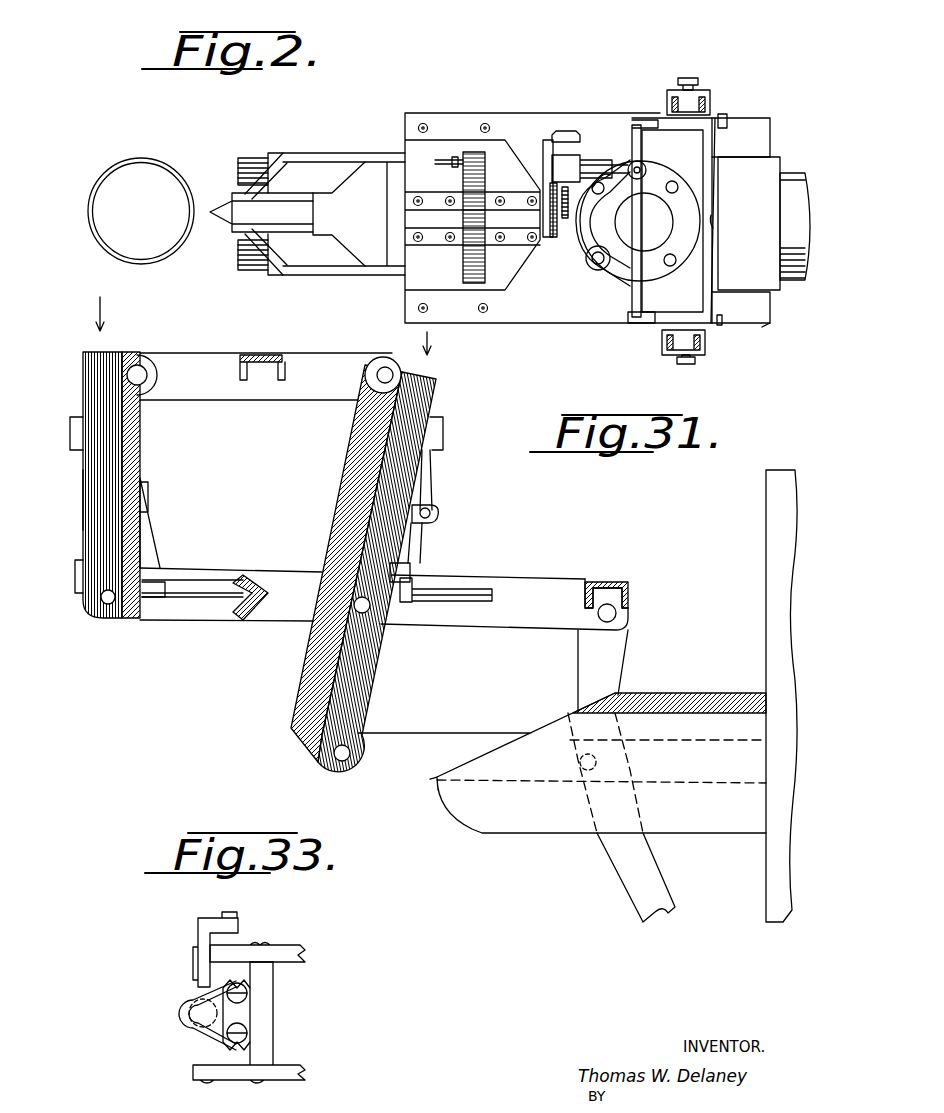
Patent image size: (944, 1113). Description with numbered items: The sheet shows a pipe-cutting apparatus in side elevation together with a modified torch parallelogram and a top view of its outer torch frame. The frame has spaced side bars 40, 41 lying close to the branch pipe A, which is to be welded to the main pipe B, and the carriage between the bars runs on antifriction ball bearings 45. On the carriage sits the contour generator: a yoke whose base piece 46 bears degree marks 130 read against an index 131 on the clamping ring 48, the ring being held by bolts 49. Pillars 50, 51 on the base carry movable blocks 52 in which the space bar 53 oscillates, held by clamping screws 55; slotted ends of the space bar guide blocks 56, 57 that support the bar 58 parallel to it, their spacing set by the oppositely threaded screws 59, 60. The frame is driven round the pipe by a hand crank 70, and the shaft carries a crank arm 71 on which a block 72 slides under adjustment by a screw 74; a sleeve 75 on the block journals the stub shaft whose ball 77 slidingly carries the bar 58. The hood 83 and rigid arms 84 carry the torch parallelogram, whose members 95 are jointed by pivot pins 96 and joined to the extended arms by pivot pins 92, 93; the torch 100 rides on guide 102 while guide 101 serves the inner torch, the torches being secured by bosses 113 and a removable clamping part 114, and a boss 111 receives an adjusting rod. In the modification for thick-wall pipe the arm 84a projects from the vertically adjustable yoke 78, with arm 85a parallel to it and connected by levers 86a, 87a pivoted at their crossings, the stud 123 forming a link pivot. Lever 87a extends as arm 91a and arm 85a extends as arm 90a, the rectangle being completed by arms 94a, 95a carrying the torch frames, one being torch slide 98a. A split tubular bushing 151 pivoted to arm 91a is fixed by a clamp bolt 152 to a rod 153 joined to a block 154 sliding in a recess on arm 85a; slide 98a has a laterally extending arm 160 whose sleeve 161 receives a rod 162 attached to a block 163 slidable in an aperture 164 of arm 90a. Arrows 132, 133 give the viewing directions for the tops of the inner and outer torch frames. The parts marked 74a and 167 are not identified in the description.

In FIG. 2, the main pipe B is at (140, 158).
In FIG. 2, the torch 100 is at (224, 194).
In FIG. 2, the rigid arms 84 is at (302, 153).
In FIG. 2, the member 95 is at (293, 195).
In FIG. 2, the side bar 41 is at (541, 117).
In FIG. 2, the hand crank 70 is at (445, 158).
In FIG. 2, the block 72 is at (556, 164).
In FIG. 2, the head 74a is at (576, 135).
In FIG. 2, the crank arm 71 is at (548, 214).
In FIG. 2, the screw 74 is at (567, 218).
In FIG. 2, the sleeve 75 is at (585, 188).
In FIG. 2, the bar 58 is at (633, 289).
In FIG. 2, the bolts 49 is at (596, 262).
In FIG. 2, the clamping ring 48 is at (682, 275).
In FIG. 2, the index 131 is at (700, 222).
In FIG. 2, the ball 77 is at (661, 170).
In FIG. 2, the block 57 is at (650, 128).
In FIG. 2, the block 56 is at (628, 318).
In FIG. 2, the space bar 53 is at (707, 182).
In FIG. 2, the antifriction ball bearings 45 is at (752, 154).
In FIG. 2, the degree marks 130 is at (716, 221).
In FIG. 2, the screw 60 is at (725, 116).
In FIG. 2, the screw 59 is at (721, 323).
In FIG. 2, the base piece 46 is at (749, 223).
In FIG. 2, the branch pipe A is at (797, 173).
In FIG. 2, the side bar 40 is at (764, 326).
In FIG. 2, the pillar 51 is at (667, 100).
In FIG. 2, the pillar 50 is at (700, 343).
In FIG. 2, the movable blocks 52 is at (667, 102).
In FIG. 2, the clamping screws 55 is at (695, 78).
In FIG. 31, the arrow 133 is at (119, 314).
In FIG. 31, the arrow 132 is at (447, 343).
In FIG. 31, the guide 102 is at (95, 375).
In FIG. 31, the arm 94a is at (140, 435).
In FIG. 33, the arm 94a is at (275, 1003).
In FIG. 31, the pivot pins 96 is at (141, 365).
In FIG. 31, the pivot pin 92 is at (105, 606).
In FIG. 31, the torch slide 98a is at (86, 498).
In FIG. 33, the torch slide 98a is at (186, 1004).
In FIG. 31, the removable clamping part 114 is at (72, 432).
In FIG. 33, the removable clamping part 114 is at (192, 1033).
In FIG. 31, the bosses 113 is at (77, 561).
In FIG. 31, the arm 95a is at (343, 396).
In FIG. 31, the arm extension 91a is at (348, 512).
In FIG. 31, the guide 101 is at (433, 388).
In FIG. 31, the pivot pin 93 is at (383, 360).
In FIG. 31, the lever 87a is at (358, 702).
In FIG. 31, the split tubular bushing 151 is at (431, 484).
In FIG. 31, the clamp bolt 152 is at (434, 513).
In FIG. 31, the rod 153 is at (425, 545).
In FIG. 31, the boss 111 is at (410, 570).
In FIG. 31, the block 154 is at (433, 598).
In FIG. 31, the arm extension 90a is at (298, 568).
In FIG. 33, the arm extension 90a is at (278, 950).
In FIG. 31, the arm 85a is at (560, 580).
In FIG. 31, the stud 123 is at (620, 620).
In FIG. 31, the aperture 164 is at (219, 577).
In FIG. 31, the block 163 is at (157, 598).
In FIG. 31, the rod 162 is at (154, 544).
In FIG. 31, the tab 167 is at (148, 496).
In FIG. 31, the lever 86a is at (592, 660).
In FIG. 31, the hood 83 is at (690, 700).
In FIG. 31, the arm 84a is at (415, 740).
In FIG. 31, the yoke 78 is at (771, 576).
In FIG. 33, the sleeve 161 is at (238, 916).
In FIG. 33, the laterally extending arm 160 is at (197, 990).